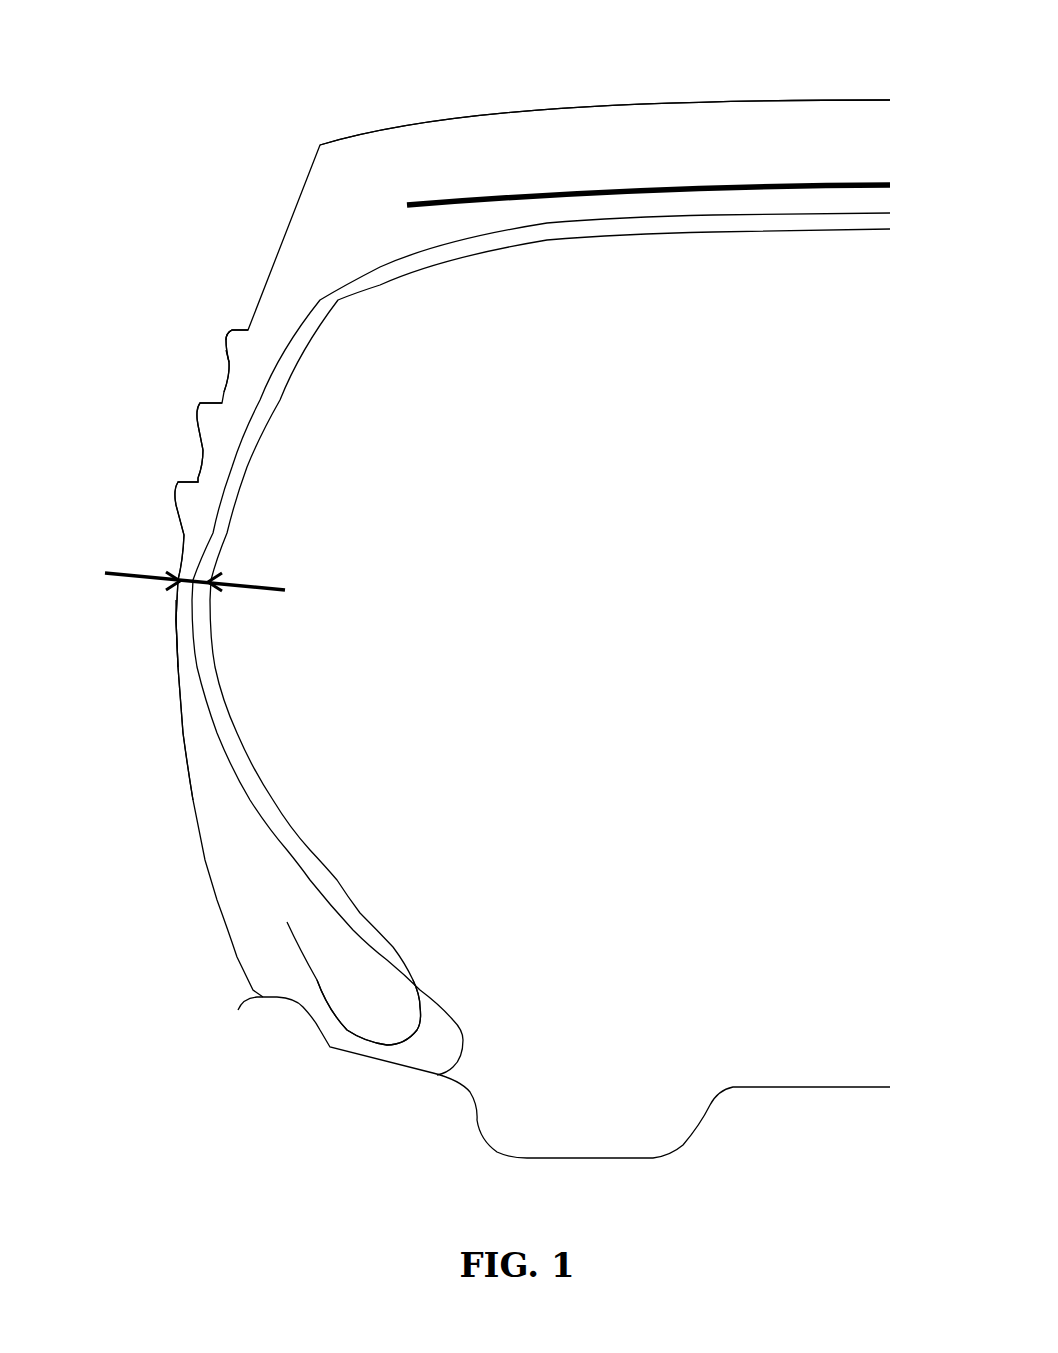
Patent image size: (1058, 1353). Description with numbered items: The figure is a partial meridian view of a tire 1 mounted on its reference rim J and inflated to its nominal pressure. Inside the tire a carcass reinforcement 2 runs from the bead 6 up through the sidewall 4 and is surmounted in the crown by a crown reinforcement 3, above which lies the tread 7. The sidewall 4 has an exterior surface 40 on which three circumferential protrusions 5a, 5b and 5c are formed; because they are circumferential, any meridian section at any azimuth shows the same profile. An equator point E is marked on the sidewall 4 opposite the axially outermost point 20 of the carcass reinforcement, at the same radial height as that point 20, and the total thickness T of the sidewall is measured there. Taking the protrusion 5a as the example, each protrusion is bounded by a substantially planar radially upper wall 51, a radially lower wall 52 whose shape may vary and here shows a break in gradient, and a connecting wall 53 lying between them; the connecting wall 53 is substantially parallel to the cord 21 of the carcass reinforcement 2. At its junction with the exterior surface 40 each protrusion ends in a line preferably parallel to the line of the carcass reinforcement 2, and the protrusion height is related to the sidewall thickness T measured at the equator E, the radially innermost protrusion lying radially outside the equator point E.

The tire 1 is at (268, 178).
The carcass reinforcement 2 is at (541, 644).
The axially outermost point of the carcass reinforcement 20 is at (212, 588).
The cord of the carcass reinforcement 21 is at (323, 303).
The crown reinforcement 3 is at (867, 182).
The sidewall 4 is at (192, 677).
The exterior surface of the sidewall 40 is at (177, 632).
The circumferential protrusion 5a is at (238, 343).
The circumferential protrusion 5b is at (212, 417).
The circumferential protrusion 5c is at (192, 493).
The radially upper wall 51 is at (240, 328).
The radially lower wall 52 is at (230, 365).
The connecting wall 53 is at (223, 335).
The bead 6 is at (382, 993).
The tread 7 is at (747, 127).
The equator point E is at (178, 580).
The total thickness of the sidewall T is at (195, 568).
The reference rim J is at (748, 1088).